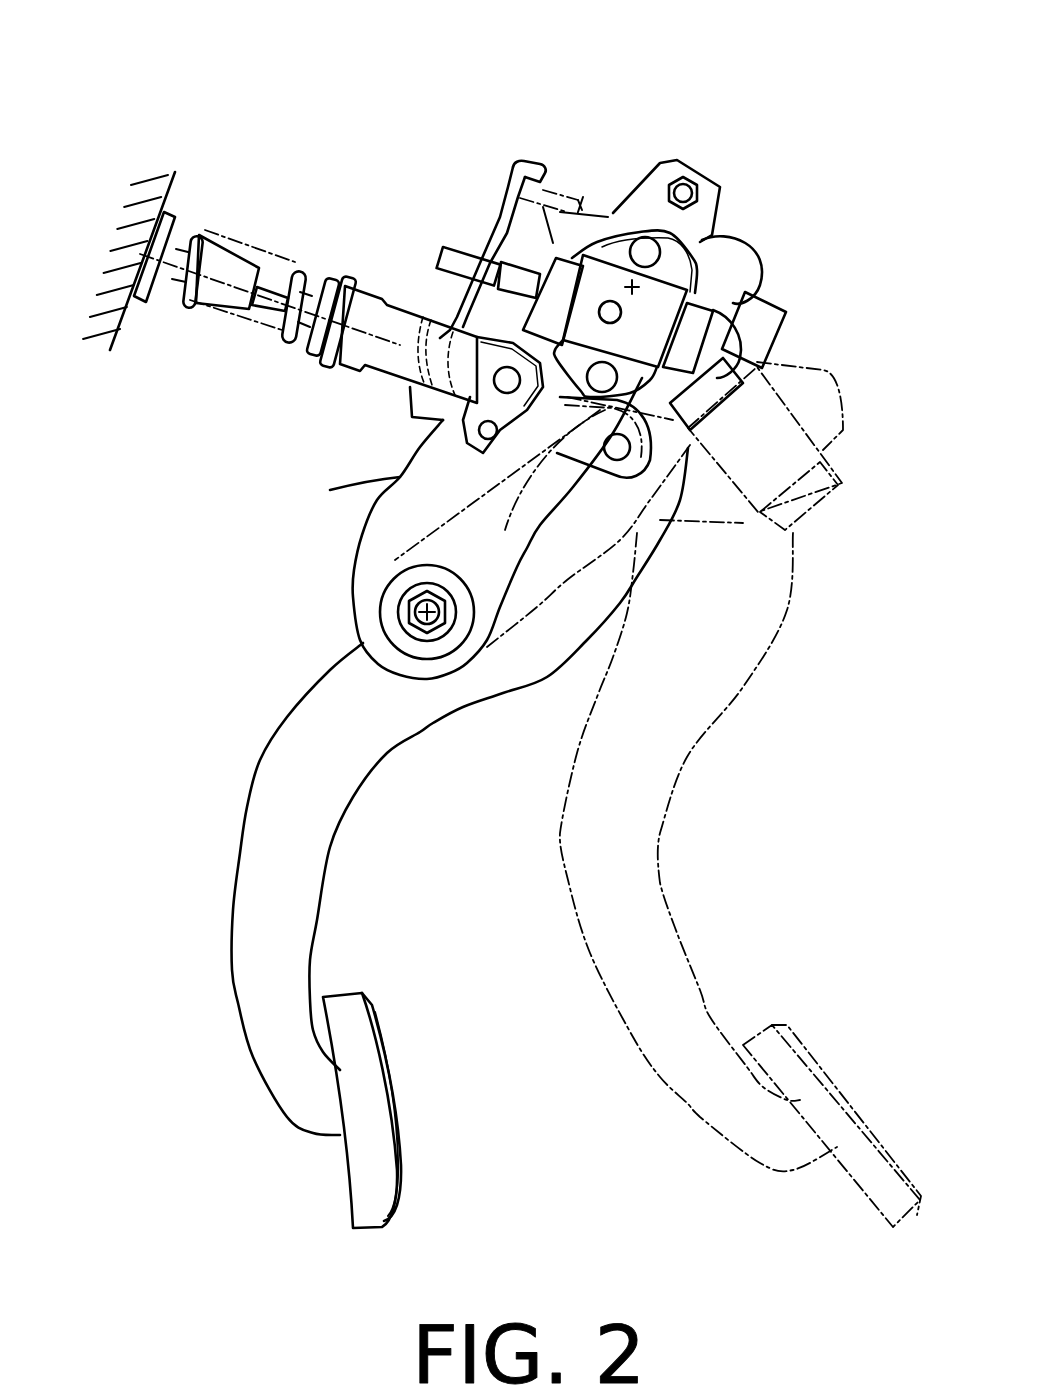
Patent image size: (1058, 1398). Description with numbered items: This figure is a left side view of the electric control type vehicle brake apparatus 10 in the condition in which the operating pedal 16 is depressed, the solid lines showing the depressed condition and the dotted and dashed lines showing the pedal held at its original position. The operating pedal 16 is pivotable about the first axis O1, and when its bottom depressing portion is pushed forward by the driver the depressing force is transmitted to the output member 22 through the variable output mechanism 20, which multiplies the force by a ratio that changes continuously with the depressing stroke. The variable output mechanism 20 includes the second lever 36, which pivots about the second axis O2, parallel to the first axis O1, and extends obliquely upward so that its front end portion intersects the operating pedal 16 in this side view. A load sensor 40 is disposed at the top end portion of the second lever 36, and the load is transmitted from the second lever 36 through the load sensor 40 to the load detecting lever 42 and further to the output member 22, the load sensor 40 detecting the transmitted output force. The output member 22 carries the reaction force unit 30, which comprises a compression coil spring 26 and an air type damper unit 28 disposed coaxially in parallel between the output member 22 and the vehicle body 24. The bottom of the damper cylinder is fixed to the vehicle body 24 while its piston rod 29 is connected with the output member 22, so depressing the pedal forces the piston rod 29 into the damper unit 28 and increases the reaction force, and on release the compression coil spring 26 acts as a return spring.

The vehicle brake apparatus 10 is at (828, 122).
The operating pedal 16 is at (265, 843).
The variable output mechanism 20 is at (300, 540).
The output member 22 is at (392, 322).
The vehicle body 24 is at (133, 242).
The compression coil spring 26 is at (207, 265).
The damper unit 28 is at (232, 292).
The piston rod 29 is at (275, 300).
The reaction force unit 30 is at (346, 212).
The second lever 36 is at (432, 495).
The load sensor 40 is at (700, 333).
The load detecting lever 42 is at (503, 207).
The first axis O1 is at (619, 308).
The second axis O2 is at (420, 612).